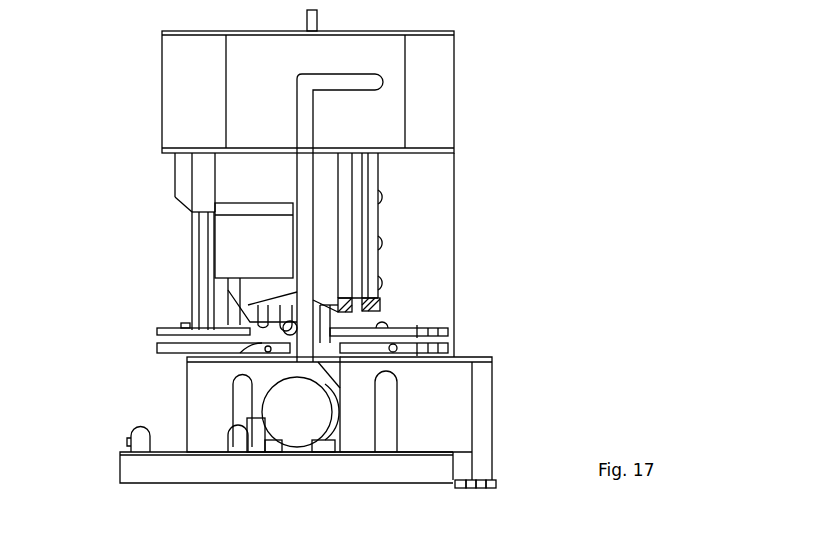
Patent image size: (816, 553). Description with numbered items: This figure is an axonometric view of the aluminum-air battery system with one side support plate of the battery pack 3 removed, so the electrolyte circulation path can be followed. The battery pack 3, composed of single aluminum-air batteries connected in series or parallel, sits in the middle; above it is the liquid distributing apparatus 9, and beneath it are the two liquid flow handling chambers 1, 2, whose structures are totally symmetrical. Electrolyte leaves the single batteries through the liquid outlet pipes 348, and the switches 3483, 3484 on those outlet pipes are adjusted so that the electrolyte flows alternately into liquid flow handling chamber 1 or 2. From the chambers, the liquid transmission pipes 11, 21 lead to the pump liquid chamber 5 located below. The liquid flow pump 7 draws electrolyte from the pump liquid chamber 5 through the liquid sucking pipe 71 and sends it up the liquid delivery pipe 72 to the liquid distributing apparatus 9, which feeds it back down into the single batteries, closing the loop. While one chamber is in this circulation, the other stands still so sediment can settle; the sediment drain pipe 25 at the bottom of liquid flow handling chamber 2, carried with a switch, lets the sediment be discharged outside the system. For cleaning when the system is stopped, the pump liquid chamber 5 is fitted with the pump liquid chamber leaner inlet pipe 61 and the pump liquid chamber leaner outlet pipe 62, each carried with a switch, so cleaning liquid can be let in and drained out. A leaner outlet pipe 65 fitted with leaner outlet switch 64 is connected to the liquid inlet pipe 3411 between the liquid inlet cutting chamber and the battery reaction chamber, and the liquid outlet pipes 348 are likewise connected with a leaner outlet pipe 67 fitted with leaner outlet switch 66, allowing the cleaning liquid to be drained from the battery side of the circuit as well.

The liquid flow handling chamber 1 is at (203, 385).
The liquid flow handling chamber 2 is at (429, 416).
The battery pack 3 is at (372, 180).
The pump liquid chamber 5 is at (150, 470).
The liquid flow pump 7 is at (296, 415).
The liquid distributing apparatus 9 is at (363, 120).
The liquid transmission pipe 11 is at (242, 402).
The liquid transmission pipe 21 is at (390, 392).
The sediment drain pipe 25 is at (493, 484).
The pump liquid chamber leaner inlet pipe 61 is at (133, 448).
The pump liquid chamber leaner outlet pipe 62 is at (461, 488).
The leaner outlet switch 64 is at (187, 327).
The leaner outlet pipe 65 is at (162, 333).
The leaner outlet switch 66 is at (355, 326).
The leaner outlet pipe 67 is at (423, 327).
The liquid sucking pipe 71 is at (238, 452).
The liquid delivery pipe 72 is at (303, 163).
The liquid outlet pipe 348 is at (345, 322).
The liquid inlet pipe 3411 is at (255, 332).
The switch 3483 is at (230, 347).
The switch 3484 is at (403, 345).